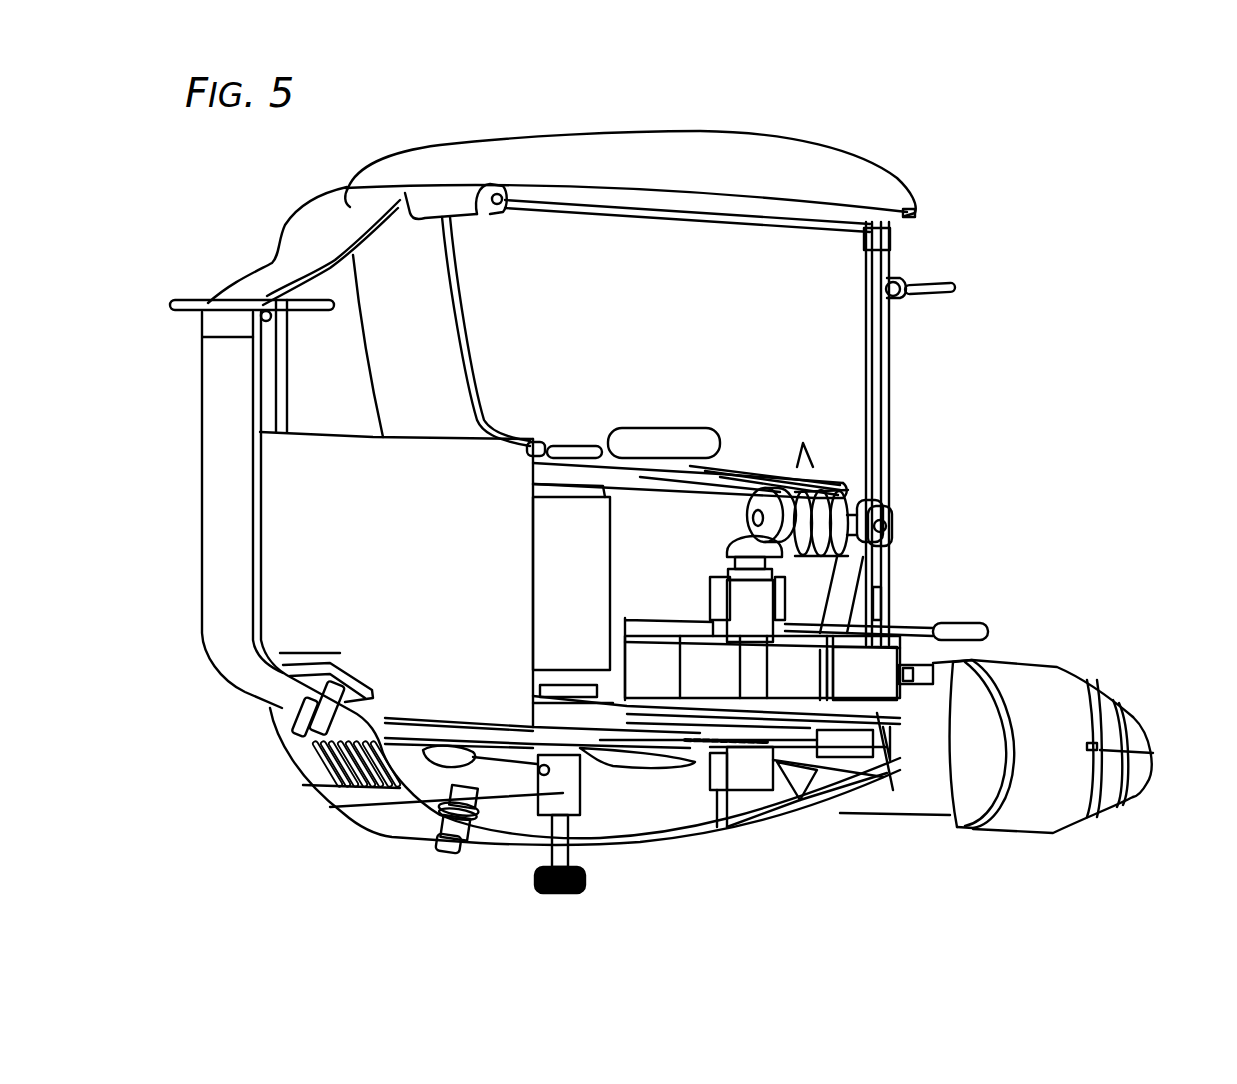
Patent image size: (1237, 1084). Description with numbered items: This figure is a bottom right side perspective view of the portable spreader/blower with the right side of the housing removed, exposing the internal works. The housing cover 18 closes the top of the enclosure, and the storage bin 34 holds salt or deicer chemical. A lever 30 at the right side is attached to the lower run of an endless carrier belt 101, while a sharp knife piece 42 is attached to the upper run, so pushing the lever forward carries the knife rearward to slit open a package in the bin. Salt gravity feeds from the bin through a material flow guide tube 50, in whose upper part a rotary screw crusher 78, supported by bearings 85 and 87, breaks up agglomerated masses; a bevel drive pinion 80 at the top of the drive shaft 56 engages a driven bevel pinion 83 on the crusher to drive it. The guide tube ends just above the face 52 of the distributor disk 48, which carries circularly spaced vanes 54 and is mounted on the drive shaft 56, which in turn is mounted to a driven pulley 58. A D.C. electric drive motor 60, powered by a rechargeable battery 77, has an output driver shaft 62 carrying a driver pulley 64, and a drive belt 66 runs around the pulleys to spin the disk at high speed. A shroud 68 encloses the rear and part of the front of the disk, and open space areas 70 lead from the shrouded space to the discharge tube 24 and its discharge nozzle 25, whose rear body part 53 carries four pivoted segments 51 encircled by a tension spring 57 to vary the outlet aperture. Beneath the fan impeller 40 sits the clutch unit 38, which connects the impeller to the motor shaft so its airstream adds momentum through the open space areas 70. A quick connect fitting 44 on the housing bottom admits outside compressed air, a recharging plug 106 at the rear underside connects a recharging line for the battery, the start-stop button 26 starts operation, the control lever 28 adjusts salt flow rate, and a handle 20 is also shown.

The housing cover 18 is at (693, 173).
The handle 20 is at (947, 283).
The discharge tube 24 is at (940, 800).
The discharge nozzle 25 is at (1133, 713).
The start-stop button 26 is at (920, 685).
The control lever 28 is at (987, 630).
The lever 30 is at (640, 430).
The storage bin 34 is at (627, 368).
The clutch unit 38 is at (540, 820).
The fan impeller 40 is at (513, 763).
The knife piece 42 is at (790, 465).
The quick connect fitting 44 is at (447, 850).
The distributor disk 48 is at (880, 705).
The material flow guide tube 50 is at (840, 572).
The segments 51 is at (1093, 800).
The face 52 is at (693, 687).
The rear body part 53 is at (1070, 790).
The vanes 54 is at (843, 689).
The drive shaft 56 is at (740, 563).
The tension spring 57 is at (1103, 817).
The driven pulley 58 is at (800, 720).
The electric drive motor 60 is at (550, 590).
The output driver shaft 62 is at (567, 693).
The driver pulley 64 is at (603, 700).
The drive belt 66 is at (655, 720).
The shroud 68 is at (627, 620).
The open space areas 70 is at (683, 807).
The battery 77 is at (393, 557).
The rotary screw crusher 78 is at (857, 510).
The bevel drive pinion 80 is at (747, 548).
The driven bevel pinion 83 is at (753, 497).
The bearing 85 is at (883, 522).
The bearing 87 is at (797, 510).
The carrier belt 101 is at (731, 457).
The recharging plug 106 is at (303, 728).